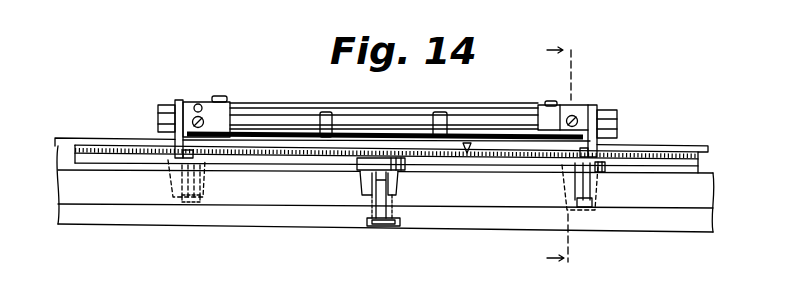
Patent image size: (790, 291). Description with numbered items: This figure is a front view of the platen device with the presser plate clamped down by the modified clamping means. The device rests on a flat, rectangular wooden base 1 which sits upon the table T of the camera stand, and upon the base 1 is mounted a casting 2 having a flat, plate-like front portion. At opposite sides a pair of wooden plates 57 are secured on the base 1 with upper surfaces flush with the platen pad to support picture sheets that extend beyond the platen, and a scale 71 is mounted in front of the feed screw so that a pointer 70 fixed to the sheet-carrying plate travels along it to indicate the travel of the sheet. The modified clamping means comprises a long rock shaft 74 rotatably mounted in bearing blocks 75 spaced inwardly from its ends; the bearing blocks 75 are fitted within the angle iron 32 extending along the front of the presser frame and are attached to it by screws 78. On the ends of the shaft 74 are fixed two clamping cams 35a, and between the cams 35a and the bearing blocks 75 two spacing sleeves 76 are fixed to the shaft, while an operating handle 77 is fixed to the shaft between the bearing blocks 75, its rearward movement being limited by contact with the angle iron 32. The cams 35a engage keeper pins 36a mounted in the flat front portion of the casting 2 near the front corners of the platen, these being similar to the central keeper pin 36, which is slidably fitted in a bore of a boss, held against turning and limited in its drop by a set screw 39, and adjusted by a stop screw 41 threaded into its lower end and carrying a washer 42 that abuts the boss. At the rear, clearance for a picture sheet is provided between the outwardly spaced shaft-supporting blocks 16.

The base 1 is at (66, 187).
The table T is at (100, 222).
The plates 57 is at (65, 138).
The scale 71 is at (129, 158).
The casting 2 is at (295, 168).
The clamping cams 35a is at (172, 121).
The spacing sleeves 76 is at (181, 112).
The bearing blocks 75 is at (214, 115).
The screws 78 is at (220, 96).
The rock shaft 74 is at (246, 125).
The operating handle 77 is at (363, 120).
The angle iron 32 is at (417, 116).
The shaft-supporting blocks 16 is at (573, 151).
The keeper pins 36a is at (206, 165).
The keeper pin 36 is at (370, 200).
The set screw 39 is at (386, 182).
The washer 42 is at (366, 226).
The stop screw 41 is at (378, 228).
The pointer 70 is at (469, 156).